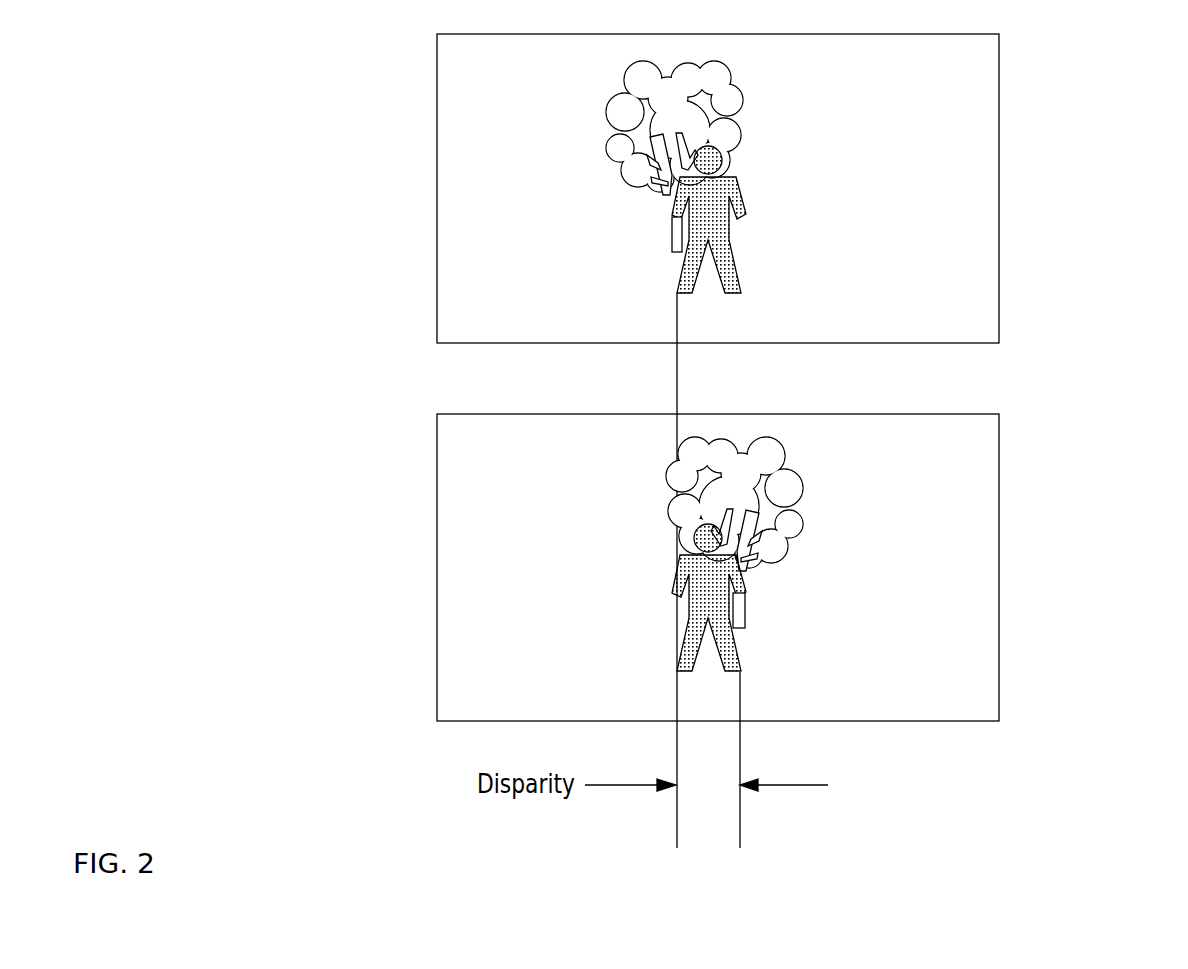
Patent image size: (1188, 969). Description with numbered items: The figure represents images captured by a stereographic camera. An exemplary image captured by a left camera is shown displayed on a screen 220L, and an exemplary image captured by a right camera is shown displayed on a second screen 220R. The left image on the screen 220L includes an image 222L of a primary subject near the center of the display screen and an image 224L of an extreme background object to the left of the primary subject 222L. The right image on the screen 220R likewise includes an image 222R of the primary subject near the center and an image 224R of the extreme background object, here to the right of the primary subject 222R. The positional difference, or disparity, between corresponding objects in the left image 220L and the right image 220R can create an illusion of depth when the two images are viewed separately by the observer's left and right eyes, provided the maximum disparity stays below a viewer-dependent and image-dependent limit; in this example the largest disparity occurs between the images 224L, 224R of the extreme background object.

The screen 220L is at (999, 160).
The second screen 220R is at (999, 528).
The image of primary subject 222L is at (742, 203).
The image of primary subject 222R is at (673, 583).
The image of extreme background object 224L is at (608, 135).
The image of extreme background object 224R is at (797, 499).